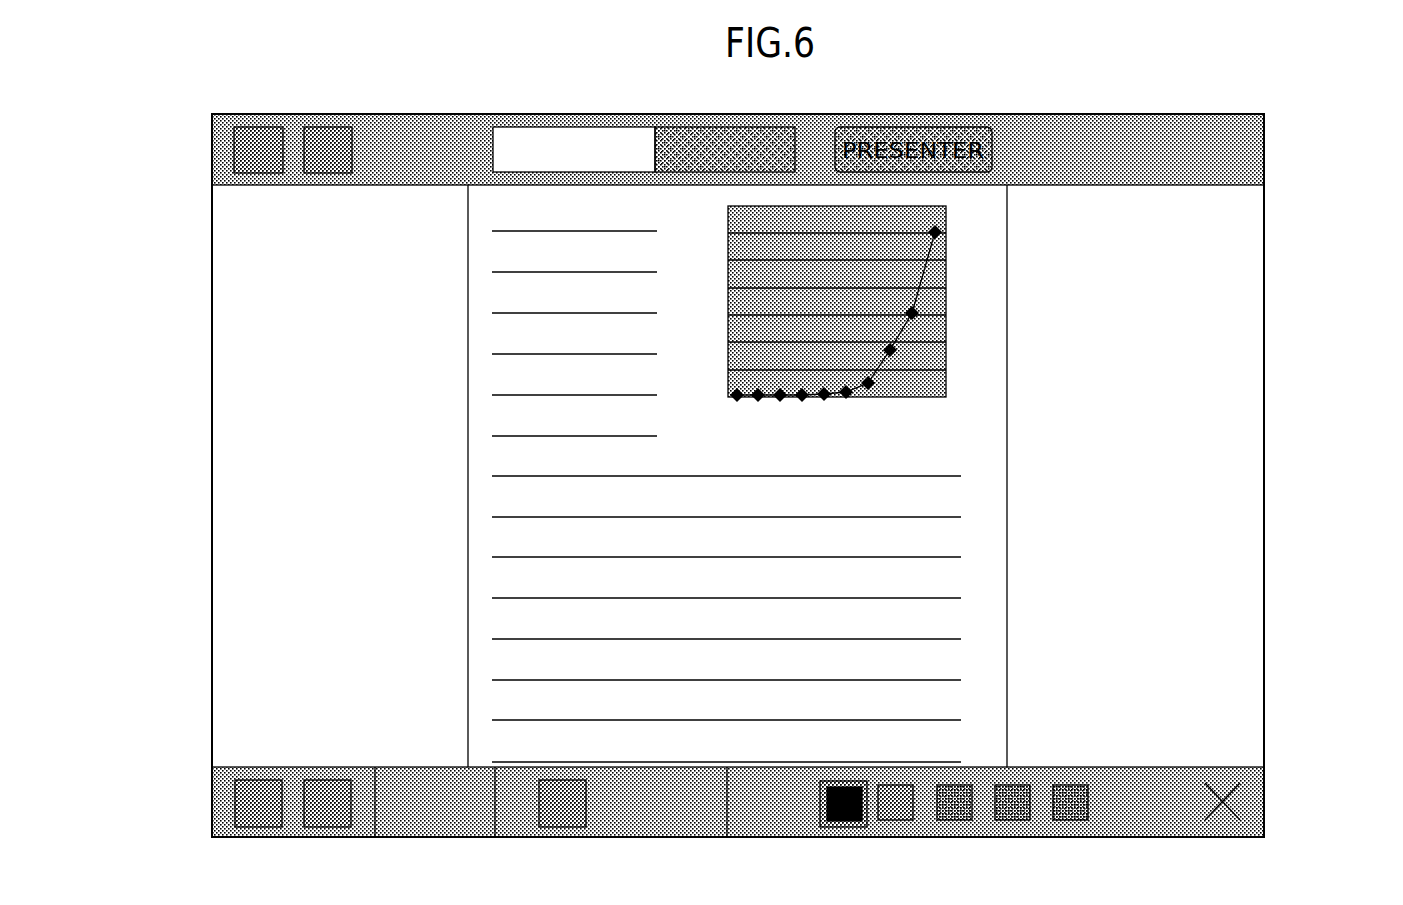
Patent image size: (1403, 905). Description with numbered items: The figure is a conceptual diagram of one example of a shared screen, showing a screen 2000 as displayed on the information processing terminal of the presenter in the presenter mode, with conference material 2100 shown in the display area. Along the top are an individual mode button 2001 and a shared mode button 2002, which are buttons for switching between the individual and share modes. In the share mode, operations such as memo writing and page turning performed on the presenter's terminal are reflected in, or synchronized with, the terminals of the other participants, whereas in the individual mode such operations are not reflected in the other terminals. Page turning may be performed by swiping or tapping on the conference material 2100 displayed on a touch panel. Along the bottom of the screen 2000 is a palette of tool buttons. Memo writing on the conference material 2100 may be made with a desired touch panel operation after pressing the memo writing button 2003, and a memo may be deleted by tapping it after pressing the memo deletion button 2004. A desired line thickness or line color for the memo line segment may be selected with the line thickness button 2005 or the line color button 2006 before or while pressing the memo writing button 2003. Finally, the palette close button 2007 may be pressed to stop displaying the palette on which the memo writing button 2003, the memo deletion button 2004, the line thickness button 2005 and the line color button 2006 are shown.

The screen 2000 is at (1264, 230).
The individual mode button 2001 is at (601, 116).
The shared mode button 2002 is at (703, 125).
The conference material 2100 is at (1007, 553).
The memo writing button 2003 is at (236, 803).
The memo deletion button 2004 is at (330, 826).
The line thickness button 2005 is at (680, 838).
The line color button 2006 is at (1031, 821).
The palette close button 2007 is at (1238, 802).